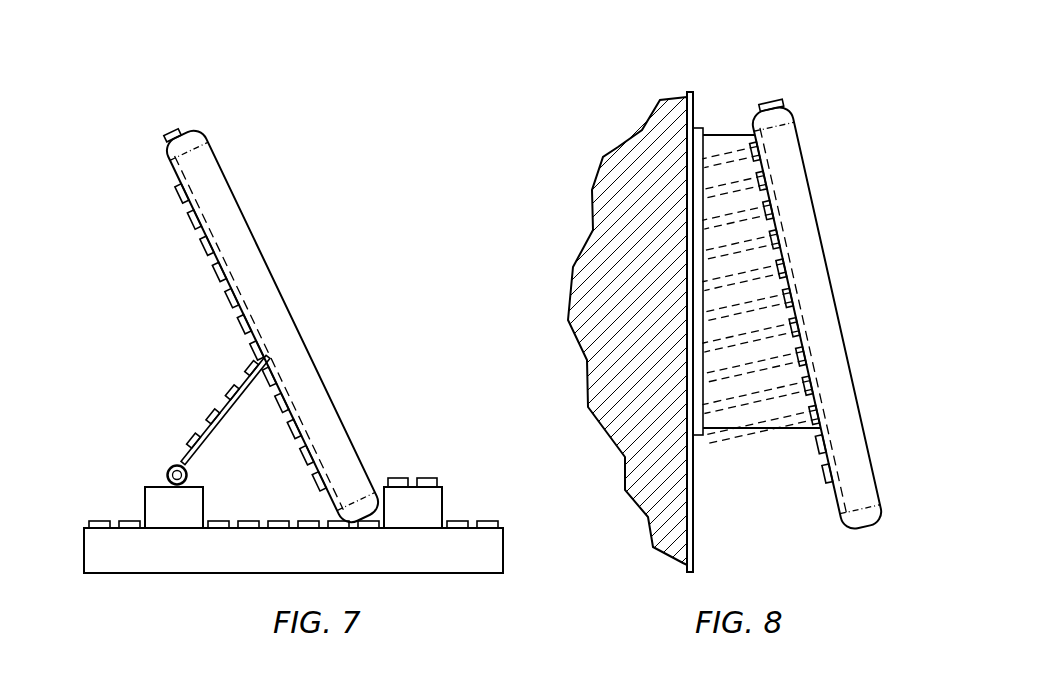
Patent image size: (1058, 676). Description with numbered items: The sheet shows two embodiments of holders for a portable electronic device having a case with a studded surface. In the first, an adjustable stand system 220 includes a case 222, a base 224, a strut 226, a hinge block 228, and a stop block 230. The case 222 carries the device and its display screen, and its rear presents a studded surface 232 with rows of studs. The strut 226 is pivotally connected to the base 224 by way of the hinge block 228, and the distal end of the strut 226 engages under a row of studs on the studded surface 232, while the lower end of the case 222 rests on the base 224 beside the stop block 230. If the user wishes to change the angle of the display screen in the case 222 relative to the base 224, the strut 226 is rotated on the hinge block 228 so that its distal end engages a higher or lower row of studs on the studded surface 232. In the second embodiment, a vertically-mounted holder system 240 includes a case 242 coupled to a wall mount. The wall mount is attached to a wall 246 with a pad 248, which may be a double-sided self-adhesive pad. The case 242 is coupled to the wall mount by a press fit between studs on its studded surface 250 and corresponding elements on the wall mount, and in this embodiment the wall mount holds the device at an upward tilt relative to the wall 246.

In FIG. 7, the system 220 is at (292, 193).
In FIG. 7, the case 222 is at (282, 304).
In FIG. 7, the base 224 is at (497, 563).
In FIG. 7, the strut 226 is at (221, 401).
In FIG. 7, the hinge block 228 is at (145, 500).
In FIG. 7, the stop block 230 is at (443, 503).
In FIG. 7, the studded surface 232 is at (172, 271).
In FIG. 8, the system 240 is at (862, 208).
In FIG. 8, the case 242 is at (838, 318).
In FIG. 8, the wall 246 is at (690, 92).
In FIG. 8, the pad 248 is at (699, 128).
In FIG. 8, the studded surface 250 is at (806, 480).